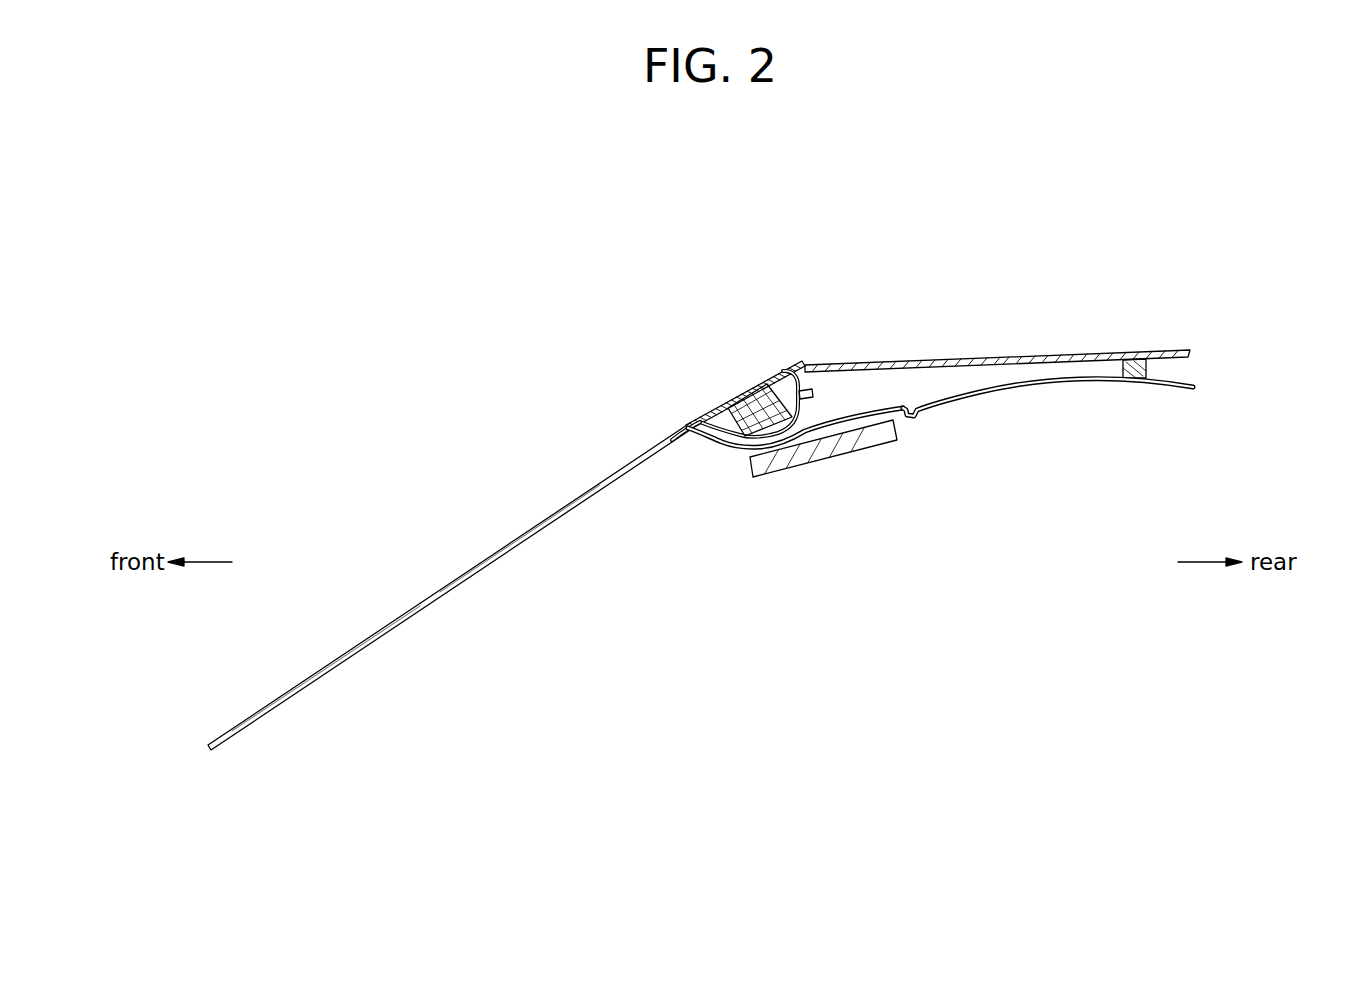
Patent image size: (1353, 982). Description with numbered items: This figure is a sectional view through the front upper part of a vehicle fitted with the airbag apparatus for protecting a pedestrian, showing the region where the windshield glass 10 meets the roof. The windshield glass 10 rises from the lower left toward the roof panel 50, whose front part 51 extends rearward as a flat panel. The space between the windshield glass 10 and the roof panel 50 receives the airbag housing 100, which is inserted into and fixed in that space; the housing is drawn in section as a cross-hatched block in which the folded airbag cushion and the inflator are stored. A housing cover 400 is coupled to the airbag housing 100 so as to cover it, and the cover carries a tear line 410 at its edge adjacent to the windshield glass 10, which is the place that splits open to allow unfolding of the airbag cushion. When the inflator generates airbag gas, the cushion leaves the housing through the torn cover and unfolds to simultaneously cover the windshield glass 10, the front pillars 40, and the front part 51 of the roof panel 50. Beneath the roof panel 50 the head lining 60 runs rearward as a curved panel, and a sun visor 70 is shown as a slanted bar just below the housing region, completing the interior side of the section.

The windshield glass 10 is at (473, 568).
The front pillar 40 is at (713, 433).
The roof panel 50 is at (1068, 356).
The front part of roof panel 51 is at (847, 365).
The head lining 60 is at (1055, 388).
The sun visor 70 is at (788, 466).
The airbag housing 100 is at (757, 402).
The housing cover 400 is at (713, 418).
The tear line 410 is at (670, 437).